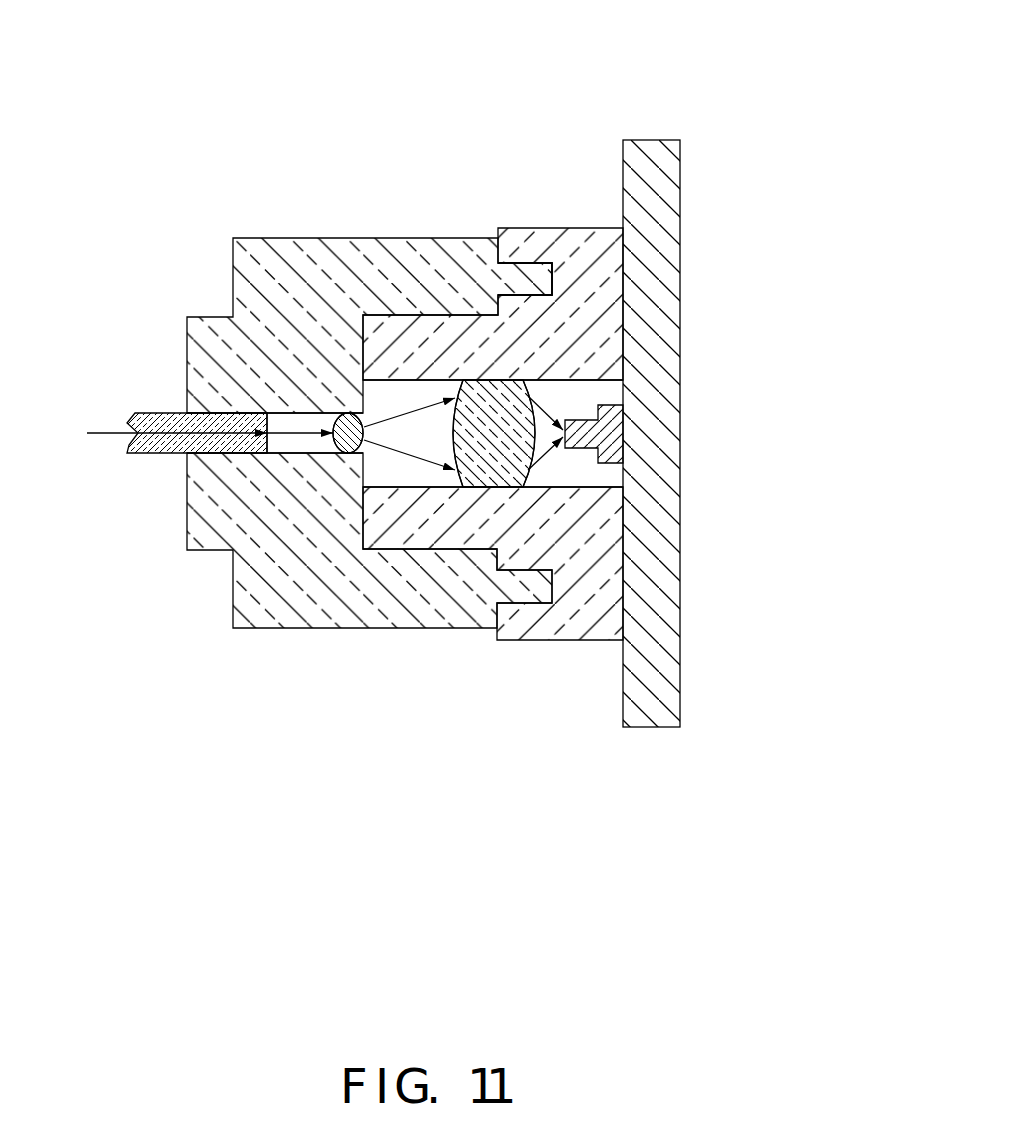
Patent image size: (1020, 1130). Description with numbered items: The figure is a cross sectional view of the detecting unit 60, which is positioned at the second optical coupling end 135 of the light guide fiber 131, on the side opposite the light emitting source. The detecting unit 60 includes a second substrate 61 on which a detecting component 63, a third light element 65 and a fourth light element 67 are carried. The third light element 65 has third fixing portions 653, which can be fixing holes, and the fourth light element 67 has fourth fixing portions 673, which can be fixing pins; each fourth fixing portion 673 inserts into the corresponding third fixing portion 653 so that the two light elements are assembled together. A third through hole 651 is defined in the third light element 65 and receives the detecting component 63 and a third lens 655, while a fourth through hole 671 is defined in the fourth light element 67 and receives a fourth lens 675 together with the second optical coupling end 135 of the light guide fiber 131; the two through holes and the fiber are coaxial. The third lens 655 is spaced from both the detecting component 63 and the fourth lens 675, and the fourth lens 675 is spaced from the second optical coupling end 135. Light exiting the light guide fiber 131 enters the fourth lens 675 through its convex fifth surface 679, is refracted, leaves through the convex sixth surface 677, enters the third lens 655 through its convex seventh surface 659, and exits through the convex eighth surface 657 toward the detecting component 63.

The detecting unit 60 is at (418, 72).
The second substrate 61 is at (657, 263).
The detecting component 63 is at (607, 433).
The third light element 65 is at (582, 265).
The third through hole 651 is at (593, 395).
The third fixing portion 653 is at (535, 265).
The third lens 655 is at (500, 462).
The eighth surface 657 is at (527, 465).
The seventh surface 659 is at (453, 440).
The fourth light element 67 is at (310, 264).
The fourth through hole 671 is at (300, 420).
The fourth fixing portion 673 is at (532, 278).
The fourth lens 675 is at (342, 455).
The sixth surface 677 is at (365, 452).
The fifth surface 679 is at (337, 455).
The light guide fiber 131 is at (150, 412).
The second optical coupling end 135 is at (270, 413).